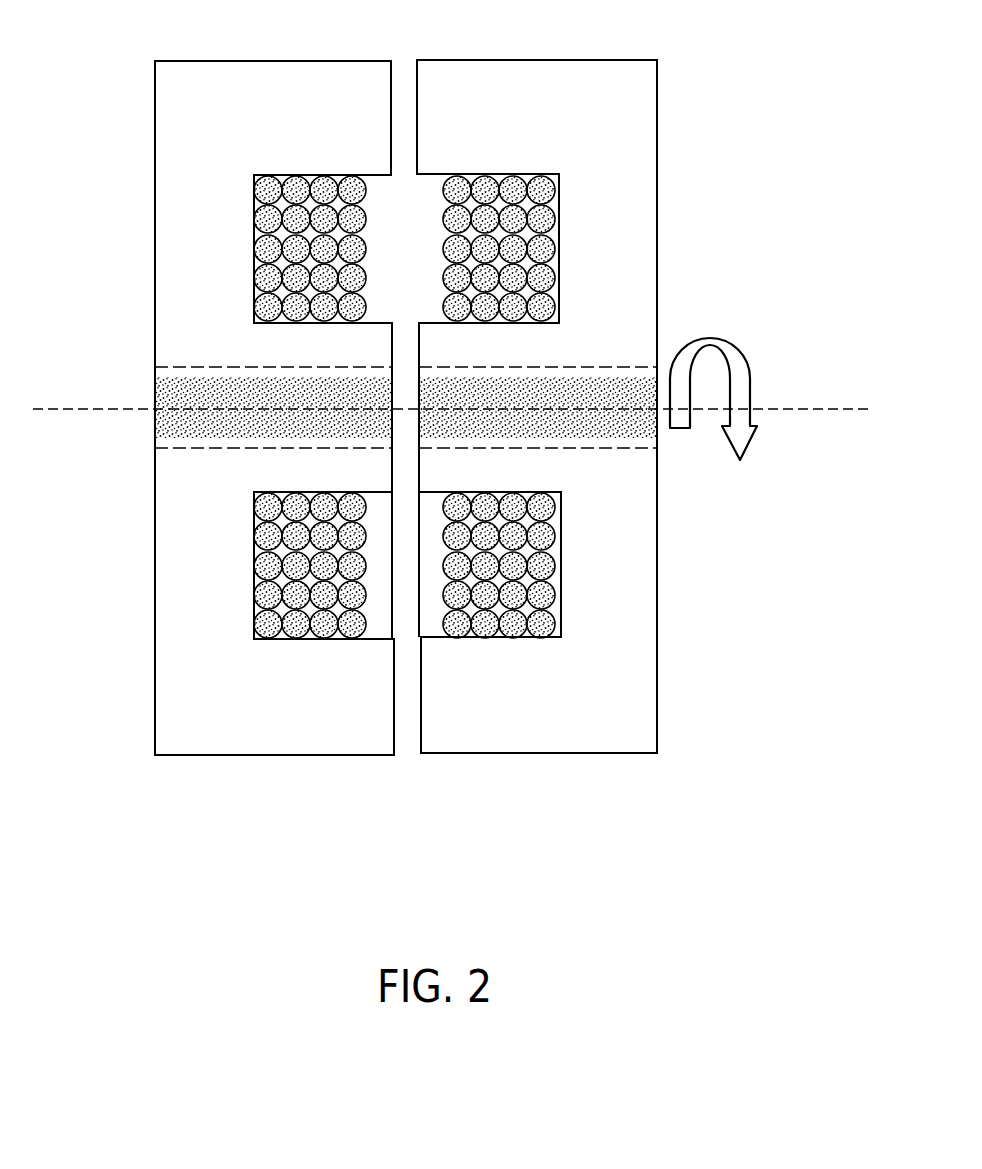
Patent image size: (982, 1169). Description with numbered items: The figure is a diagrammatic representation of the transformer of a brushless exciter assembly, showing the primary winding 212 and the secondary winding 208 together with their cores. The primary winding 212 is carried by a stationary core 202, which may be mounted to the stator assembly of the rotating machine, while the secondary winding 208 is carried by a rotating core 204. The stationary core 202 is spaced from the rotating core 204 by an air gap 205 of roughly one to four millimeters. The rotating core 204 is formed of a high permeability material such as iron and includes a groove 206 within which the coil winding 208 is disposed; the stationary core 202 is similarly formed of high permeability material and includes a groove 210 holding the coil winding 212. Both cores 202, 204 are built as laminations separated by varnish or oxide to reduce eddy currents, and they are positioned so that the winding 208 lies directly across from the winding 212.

The stationary core 202 is at (243, 743).
The rotating core 204 is at (623, 738).
The air gap 205 is at (405, 60).
The groove 206 is at (441, 618).
The secondary winding 208 is at (547, 218).
The groove 210 is at (380, 566).
The primary winding 212 is at (268, 188).